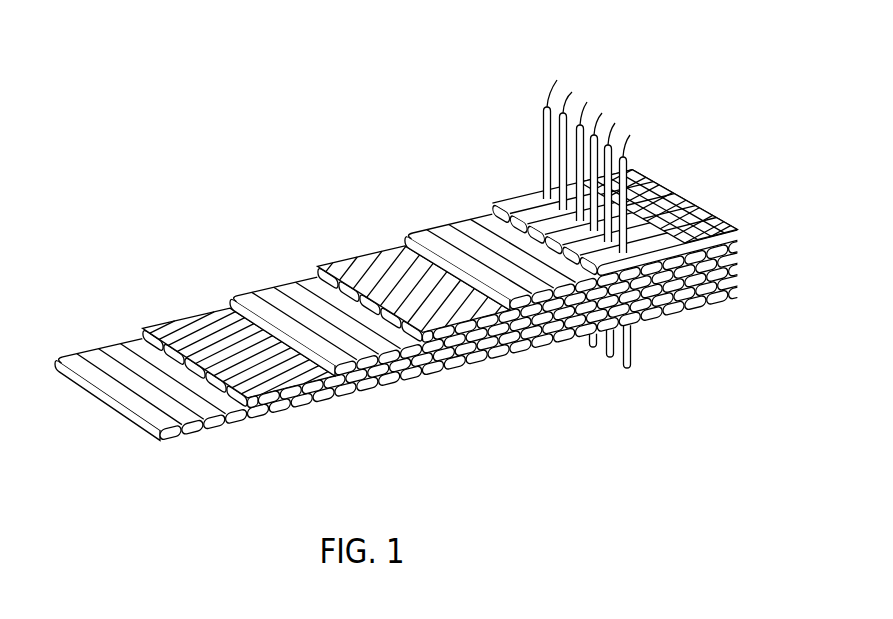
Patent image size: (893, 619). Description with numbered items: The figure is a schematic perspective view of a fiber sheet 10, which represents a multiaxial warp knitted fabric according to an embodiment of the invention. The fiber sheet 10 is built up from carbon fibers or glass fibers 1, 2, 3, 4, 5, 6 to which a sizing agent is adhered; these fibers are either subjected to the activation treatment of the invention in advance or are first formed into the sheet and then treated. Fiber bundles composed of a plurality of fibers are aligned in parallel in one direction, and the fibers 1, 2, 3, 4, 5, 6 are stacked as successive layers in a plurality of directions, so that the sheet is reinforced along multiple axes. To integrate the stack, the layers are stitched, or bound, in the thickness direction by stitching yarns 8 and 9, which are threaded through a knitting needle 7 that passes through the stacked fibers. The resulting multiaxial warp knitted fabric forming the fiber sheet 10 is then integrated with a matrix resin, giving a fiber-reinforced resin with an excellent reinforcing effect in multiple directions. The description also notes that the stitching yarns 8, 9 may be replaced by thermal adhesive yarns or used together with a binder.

The fibers 1 is at (93, 347).
The fibers 2 is at (182, 323).
The fibers 3 is at (265, 288).
The fibers 4 is at (353, 256).
The fibers 5 is at (438, 220).
The fibers 6 is at (507, 198).
The knitting needle 7 is at (633, 343).
The stitching yarn 8 is at (555, 100).
The stitching yarn 9 is at (725, 217).
The fiber sheet 10 is at (257, 90).